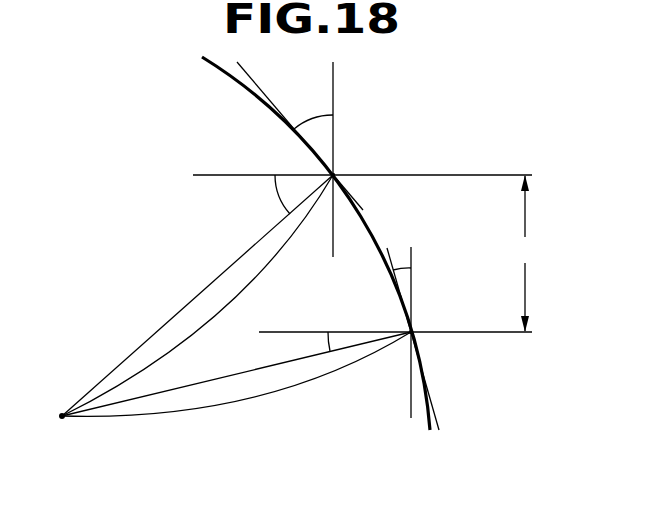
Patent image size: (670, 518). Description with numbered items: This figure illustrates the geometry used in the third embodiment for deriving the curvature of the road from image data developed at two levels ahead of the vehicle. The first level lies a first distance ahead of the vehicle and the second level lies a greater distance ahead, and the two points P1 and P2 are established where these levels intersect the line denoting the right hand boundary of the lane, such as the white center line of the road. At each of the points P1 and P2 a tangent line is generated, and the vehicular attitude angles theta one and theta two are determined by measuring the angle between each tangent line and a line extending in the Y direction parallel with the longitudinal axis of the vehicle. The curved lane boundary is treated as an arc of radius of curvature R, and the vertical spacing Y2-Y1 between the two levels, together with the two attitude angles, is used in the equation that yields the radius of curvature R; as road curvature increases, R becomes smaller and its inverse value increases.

The point P1 is at (415, 335).
The point P2 is at (338, 169).
The radius of curvature R is at (235, 297).
The difference between the two level distances Y2-Y1 is at (527, 253).